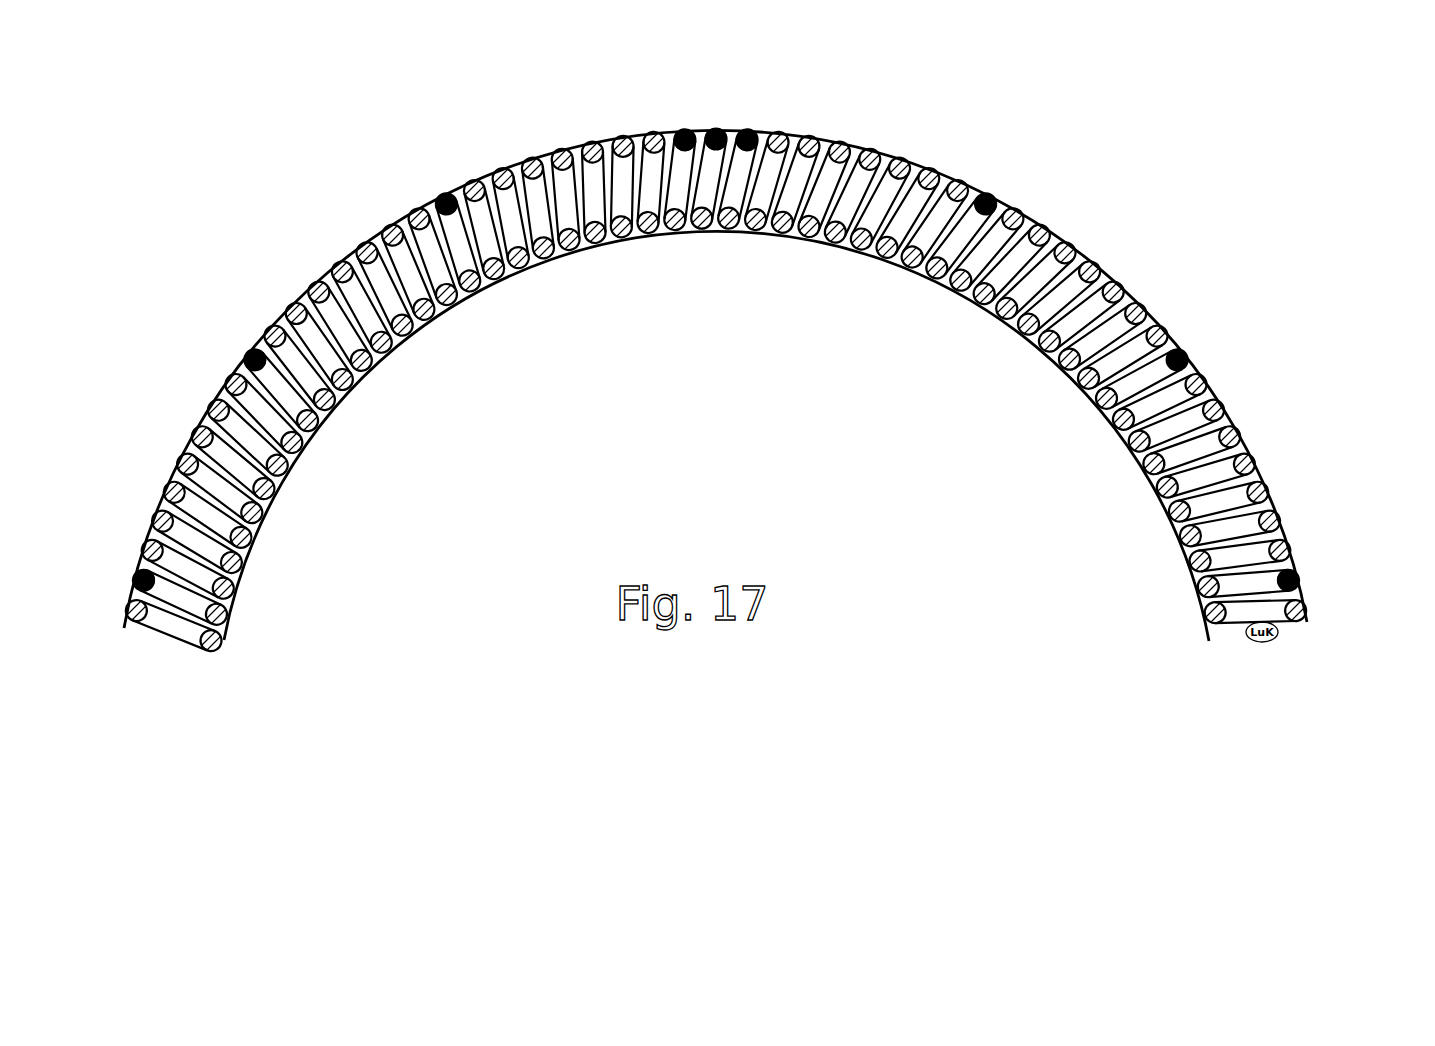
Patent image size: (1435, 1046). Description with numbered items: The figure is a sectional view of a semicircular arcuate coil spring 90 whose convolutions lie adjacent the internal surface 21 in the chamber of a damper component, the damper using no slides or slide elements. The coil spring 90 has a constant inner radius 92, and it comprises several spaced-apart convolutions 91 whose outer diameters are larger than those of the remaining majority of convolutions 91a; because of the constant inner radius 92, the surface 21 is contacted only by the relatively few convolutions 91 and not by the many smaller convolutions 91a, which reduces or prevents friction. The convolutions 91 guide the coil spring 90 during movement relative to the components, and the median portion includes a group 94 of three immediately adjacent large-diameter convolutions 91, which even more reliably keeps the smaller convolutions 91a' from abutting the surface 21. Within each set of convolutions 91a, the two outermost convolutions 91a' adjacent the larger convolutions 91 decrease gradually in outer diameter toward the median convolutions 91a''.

The arcuate coil spring 90 is at (736, 396).
The convolutions 91 is at (736, 340).
The internal surface 21 is at (336, 265).
The inner radius 92 is at (361, 378).
The group of springs 94 is at (662, 247).
The convolutions 91a is at (1081, 286).
The outermost convolutions 91a' is at (843, 246).
The median convolutions 91a'' is at (841, 156).